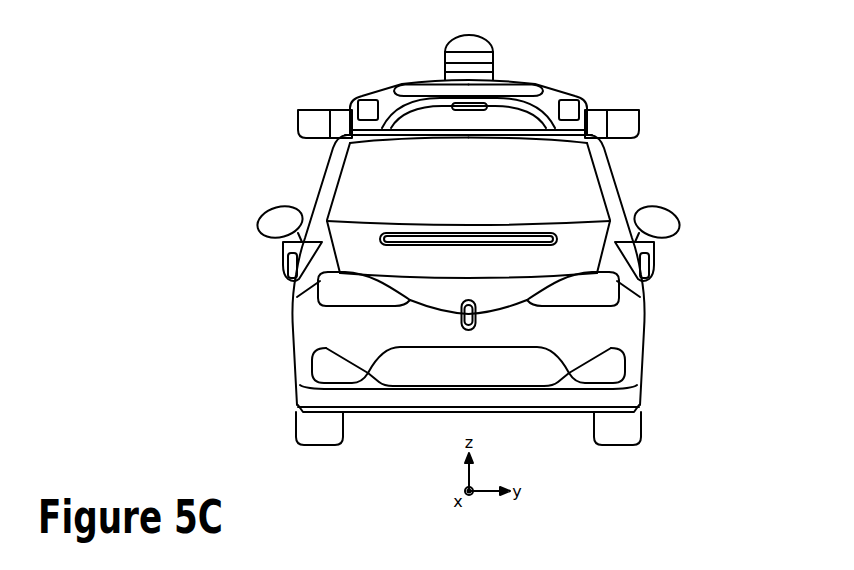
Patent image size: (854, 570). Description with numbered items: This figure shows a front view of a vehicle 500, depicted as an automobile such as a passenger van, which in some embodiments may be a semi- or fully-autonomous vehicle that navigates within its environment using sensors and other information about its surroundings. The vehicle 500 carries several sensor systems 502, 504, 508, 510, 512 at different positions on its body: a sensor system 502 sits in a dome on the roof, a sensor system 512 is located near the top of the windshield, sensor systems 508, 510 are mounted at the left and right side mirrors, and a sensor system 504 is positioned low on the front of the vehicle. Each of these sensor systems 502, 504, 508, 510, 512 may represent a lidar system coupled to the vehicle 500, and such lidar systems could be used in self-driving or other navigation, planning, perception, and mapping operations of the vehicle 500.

The vehicle 500 is at (673, 68).
The sensor system 502 is at (487, 45).
The sensor system 504 is at (470, 331).
The sensor system 508 is at (283, 265).
The sensor system 510 is at (655, 268).
The sensor system 512 is at (470, 110).